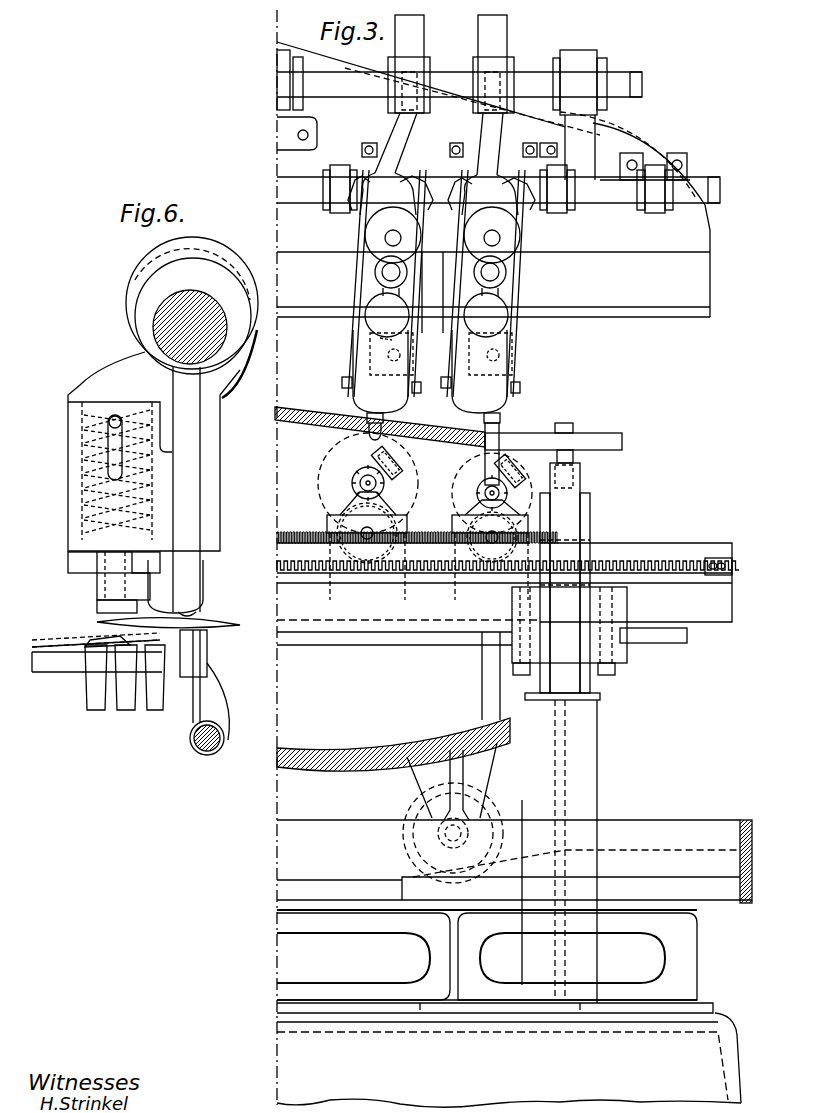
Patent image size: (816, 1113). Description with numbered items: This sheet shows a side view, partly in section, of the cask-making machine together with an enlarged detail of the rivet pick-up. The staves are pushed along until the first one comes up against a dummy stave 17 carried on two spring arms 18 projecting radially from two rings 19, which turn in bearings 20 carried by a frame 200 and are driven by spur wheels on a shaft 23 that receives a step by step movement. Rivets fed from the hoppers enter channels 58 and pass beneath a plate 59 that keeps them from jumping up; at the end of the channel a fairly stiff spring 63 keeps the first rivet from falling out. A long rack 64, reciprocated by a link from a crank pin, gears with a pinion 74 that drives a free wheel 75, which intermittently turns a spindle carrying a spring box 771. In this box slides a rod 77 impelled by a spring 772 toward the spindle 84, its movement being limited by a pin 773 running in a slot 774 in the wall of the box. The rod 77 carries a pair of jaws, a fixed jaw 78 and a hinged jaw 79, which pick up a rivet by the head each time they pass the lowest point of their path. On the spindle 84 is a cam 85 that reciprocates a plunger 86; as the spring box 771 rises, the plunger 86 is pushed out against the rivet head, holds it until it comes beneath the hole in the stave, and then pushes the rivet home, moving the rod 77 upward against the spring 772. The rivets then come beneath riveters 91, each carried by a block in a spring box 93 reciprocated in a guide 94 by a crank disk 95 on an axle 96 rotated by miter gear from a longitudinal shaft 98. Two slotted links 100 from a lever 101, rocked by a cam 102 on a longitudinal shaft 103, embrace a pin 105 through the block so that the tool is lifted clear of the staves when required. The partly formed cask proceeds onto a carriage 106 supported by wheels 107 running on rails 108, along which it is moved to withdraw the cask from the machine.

In FIG. 3, the dummy stave 17 is at (610, 432).
In FIG. 3, the spring arms 18 is at (574, 456).
In FIG. 3, the rings 19 is at (570, 514).
In FIG. 3, the bearings 20 is at (584, 795).
In FIG. 3, the shaft 23 is at (365, 640).
In FIG. 6, the channels 58 is at (55, 676).
In FIG. 3, the plate 59 is at (288, 532).
In FIG. 6, the plate 59 is at (40, 640).
In FIG. 6, the spring 63 is at (218, 712).
In FIG. 3, the long rack 64 is at (440, 570).
In FIG. 3, the pinion 74 is at (392, 560).
In FIG. 3, the free wheel 75 is at (477, 488).
In FIG. 6, the rod 77 is at (113, 412).
In FIG. 6, the fixed jaw 78 is at (222, 620).
In FIG. 6, the hinged jaw 79 is at (100, 615).
In FIG. 6, the spindle 84 is at (155, 325).
In FIG. 6, the cam 85 is at (230, 262).
In FIG. 3, the plunger 86 is at (378, 455).
In FIG. 6, the plunger 86 is at (190, 445).
In FIG. 3, the riveters 91 is at (385, 420).
In FIG. 3, the spring box 93 is at (367, 360).
In FIG. 3, the guide 94 is at (352, 330).
In FIG. 3, the crank disk 95 is at (372, 228).
In FIG. 3, the axle 96 is at (387, 296).
In FIG. 3, the longitudinal shaft 98 is at (602, 192).
In FIG. 3, the slotted links 100 is at (410, 352).
In FIG. 3, the lever 101 is at (483, 118).
In FIG. 3, the cam 102 is at (478, 32).
In FIG. 3, the longitudinal shaft 103 is at (620, 80).
In FIG. 3, the pin 105 is at (342, 385).
In FIG. 3, the carriage 106 is at (308, 760).
In FIG. 3, the wheels 107 is at (420, 810).
In FIG. 3, the rails 108 is at (690, 806).
In FIG. 3, the frame 200 is at (655, 546).
In FIG. 3, the spring box 771 is at (357, 470).
In FIG. 6, the spring box 771 is at (68, 422).
In FIG. 6, the spring 772 is at (90, 485).
In FIG. 6, the pin 773 is at (118, 425).
In FIG. 6, the slot 774 is at (112, 438).